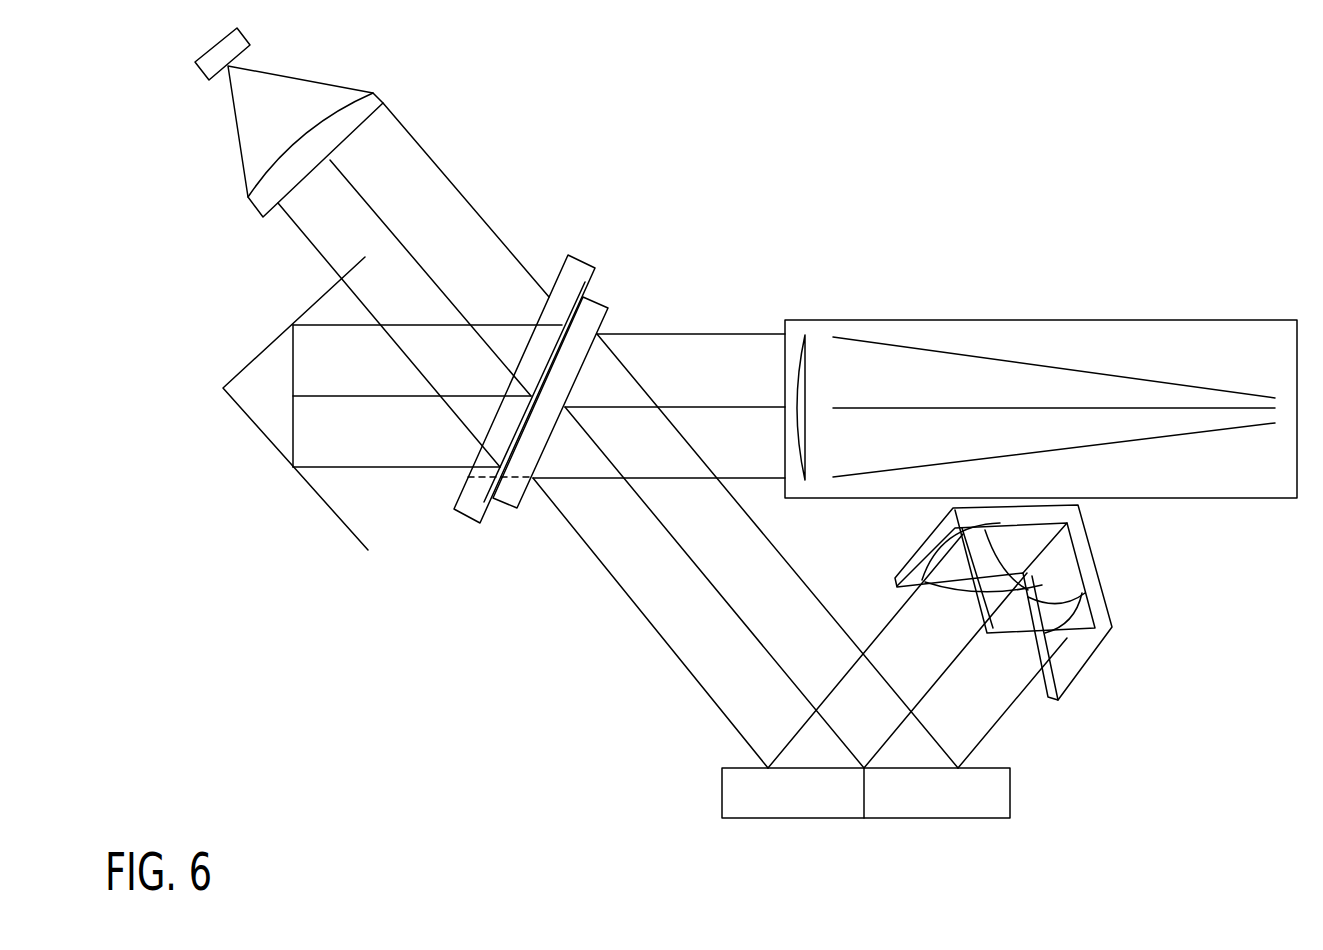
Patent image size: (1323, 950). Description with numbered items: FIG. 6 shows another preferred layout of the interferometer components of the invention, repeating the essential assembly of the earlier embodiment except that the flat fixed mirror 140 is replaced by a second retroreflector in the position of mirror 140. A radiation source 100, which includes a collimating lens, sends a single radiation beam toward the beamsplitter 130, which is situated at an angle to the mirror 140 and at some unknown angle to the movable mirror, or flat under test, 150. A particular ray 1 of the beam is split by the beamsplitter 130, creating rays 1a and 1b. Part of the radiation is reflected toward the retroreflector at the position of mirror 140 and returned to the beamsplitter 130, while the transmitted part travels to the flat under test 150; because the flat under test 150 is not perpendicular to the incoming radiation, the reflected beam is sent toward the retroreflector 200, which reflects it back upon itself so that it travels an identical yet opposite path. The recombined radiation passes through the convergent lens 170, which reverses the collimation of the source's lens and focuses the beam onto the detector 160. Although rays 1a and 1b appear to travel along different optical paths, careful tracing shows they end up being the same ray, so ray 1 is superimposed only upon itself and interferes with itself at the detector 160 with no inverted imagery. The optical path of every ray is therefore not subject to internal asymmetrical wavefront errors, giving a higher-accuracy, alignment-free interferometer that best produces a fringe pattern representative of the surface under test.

The ray 1 is at (659, 388).
The ray 1a is at (663, 435).
The ray 1b is at (427, 364).
The radiation source 100 is at (1040, 320).
The beamsplitter 130 is at (586, 254).
The fixed mirror 140 is at (247, 418).
The flat under test 150 is at (783, 820).
The detector 160 is at (200, 70).
The convergent lens 170 is at (383, 100).
The retroreflector 200 is at (1093, 550).